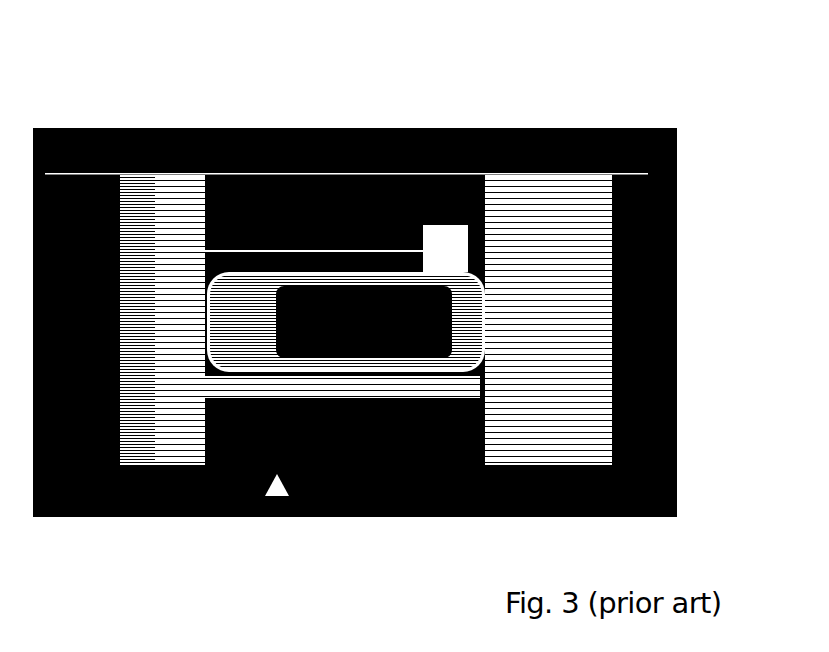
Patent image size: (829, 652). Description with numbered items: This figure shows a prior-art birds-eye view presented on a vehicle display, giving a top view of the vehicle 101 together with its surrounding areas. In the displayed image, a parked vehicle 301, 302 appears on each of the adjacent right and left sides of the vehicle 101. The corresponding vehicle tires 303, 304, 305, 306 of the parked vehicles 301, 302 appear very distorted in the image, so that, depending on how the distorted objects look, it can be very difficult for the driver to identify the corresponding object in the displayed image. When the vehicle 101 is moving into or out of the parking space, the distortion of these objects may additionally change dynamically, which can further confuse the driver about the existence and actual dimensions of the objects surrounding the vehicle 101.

The vehicle 101 is at (393, 303).
The parked vehicle 301 is at (245, 200).
The parked vehicle 302 is at (197, 517).
The vehicle tire 303 is at (177, 192).
The vehicle tire 304 is at (443, 213).
The vehicle tire 305 is at (146, 517).
The vehicle tire 306 is at (443, 517).